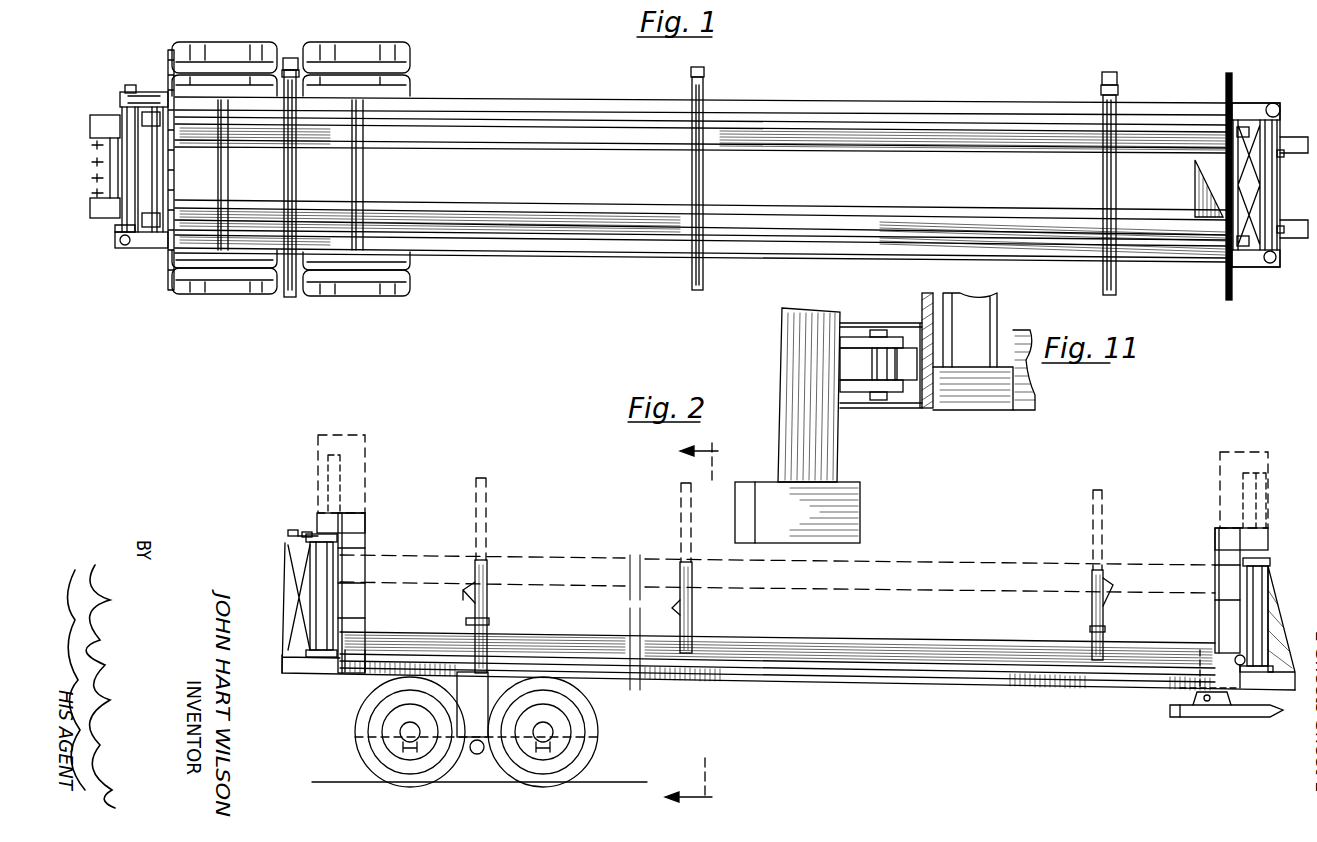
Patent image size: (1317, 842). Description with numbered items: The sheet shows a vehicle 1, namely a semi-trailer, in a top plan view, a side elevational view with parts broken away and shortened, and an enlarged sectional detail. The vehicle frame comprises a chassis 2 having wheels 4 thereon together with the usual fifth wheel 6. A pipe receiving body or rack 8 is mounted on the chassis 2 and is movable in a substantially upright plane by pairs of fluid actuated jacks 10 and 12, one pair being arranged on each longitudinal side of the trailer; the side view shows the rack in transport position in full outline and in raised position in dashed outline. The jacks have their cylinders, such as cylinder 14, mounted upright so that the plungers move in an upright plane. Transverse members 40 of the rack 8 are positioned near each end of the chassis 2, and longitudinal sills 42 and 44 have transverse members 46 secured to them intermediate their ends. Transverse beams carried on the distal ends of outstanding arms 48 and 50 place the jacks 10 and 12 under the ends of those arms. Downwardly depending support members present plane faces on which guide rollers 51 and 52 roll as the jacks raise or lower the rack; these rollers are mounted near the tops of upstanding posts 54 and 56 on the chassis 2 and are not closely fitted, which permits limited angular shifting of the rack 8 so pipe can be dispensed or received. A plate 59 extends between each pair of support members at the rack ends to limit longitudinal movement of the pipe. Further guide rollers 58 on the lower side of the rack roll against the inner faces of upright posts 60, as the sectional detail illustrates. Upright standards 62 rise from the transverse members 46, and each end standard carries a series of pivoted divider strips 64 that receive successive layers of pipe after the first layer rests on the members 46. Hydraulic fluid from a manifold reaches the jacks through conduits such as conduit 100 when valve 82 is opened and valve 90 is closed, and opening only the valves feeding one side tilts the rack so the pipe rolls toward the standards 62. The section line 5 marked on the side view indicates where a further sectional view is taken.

In FIG. 1, the vehicle 1 is at (757, 120).
In FIG. 2, the vehicle 1 is at (975, 690).
In FIG. 1, the chassis 2 is at (655, 210).
In FIG. 2, the chassis 2 is at (818, 684).
In FIG. 1, the wheels 4 is at (232, 58).
In FIG. 2, the wheels 4 is at (368, 708).
In FIG. 2, the section line 5 is at (684, 625).
In FIG. 1, the fifth wheel 6 is at (1195, 178).
In FIG. 2, the fifth wheel 6 is at (1215, 717).
In FIG. 1, the body or rack 8 is at (965, 255).
In FIG. 2, the body or rack 8 is at (780, 643).
In FIG. 1, the fluid actuated jack 10 is at (120, 248).
In FIG. 2, the fluid actuated jack 10 is at (330, 601).
In FIG. 1, the fluid actuated jack 12 is at (130, 86).
In FIG. 2, the cylinder 14 is at (333, 620).
In FIG. 11, the transverse member 40 is at (795, 368).
In FIG. 2, the transverse member 40 is at (345, 672).
In FIG. 1, the longitudinal sill 42 is at (740, 248).
In FIG. 11, the longitudinal sill 42 is at (858, 510).
In FIG. 2, the longitudinal sill 42 is at (730, 656).
In FIG. 1, the longitudinal sill 44 is at (878, 103).
In FIG. 1, the transverse member 46 is at (296, 185).
In FIG. 2, the transverse member 46 is at (487, 640).
In FIG. 1, the outstanding arm 48 is at (143, 248).
In FIG. 2, the outstanding arm 48 is at (318, 446).
In FIG. 1, the outstanding arm 50 is at (160, 92).
In FIG. 1, the guide roller 51 is at (160, 218).
In FIG. 1, the guide roller 52 is at (160, 120).
In FIG. 1, the upstanding post 54 is at (120, 228).
In FIG. 1, the upstanding post 56 is at (128, 115).
In FIG. 11, the guide roller 58 is at (895, 347).
In FIG. 2, the guide roller 58 is at (1273, 672).
In FIG. 1, the plate 59 is at (174, 70).
In FIG. 2, the plate 59 is at (365, 526).
In FIG. 1, the upright post 60 is at (1281, 150).
In FIG. 11, the upright post 60 is at (1002, 400).
In FIG. 1, the upright standard 62 is at (295, 58).
In FIG. 2, the upright standard 62 is at (470, 588).
In FIG. 1, the divider strip 64 is at (290, 70).
In FIG. 2, the divider strip 64 is at (466, 621).
In FIG. 2, the valve 82 is at (288, 538).
In FIG. 2, the valve 90 is at (300, 531).
In FIG. 2, the conduit 100 is at (292, 580).